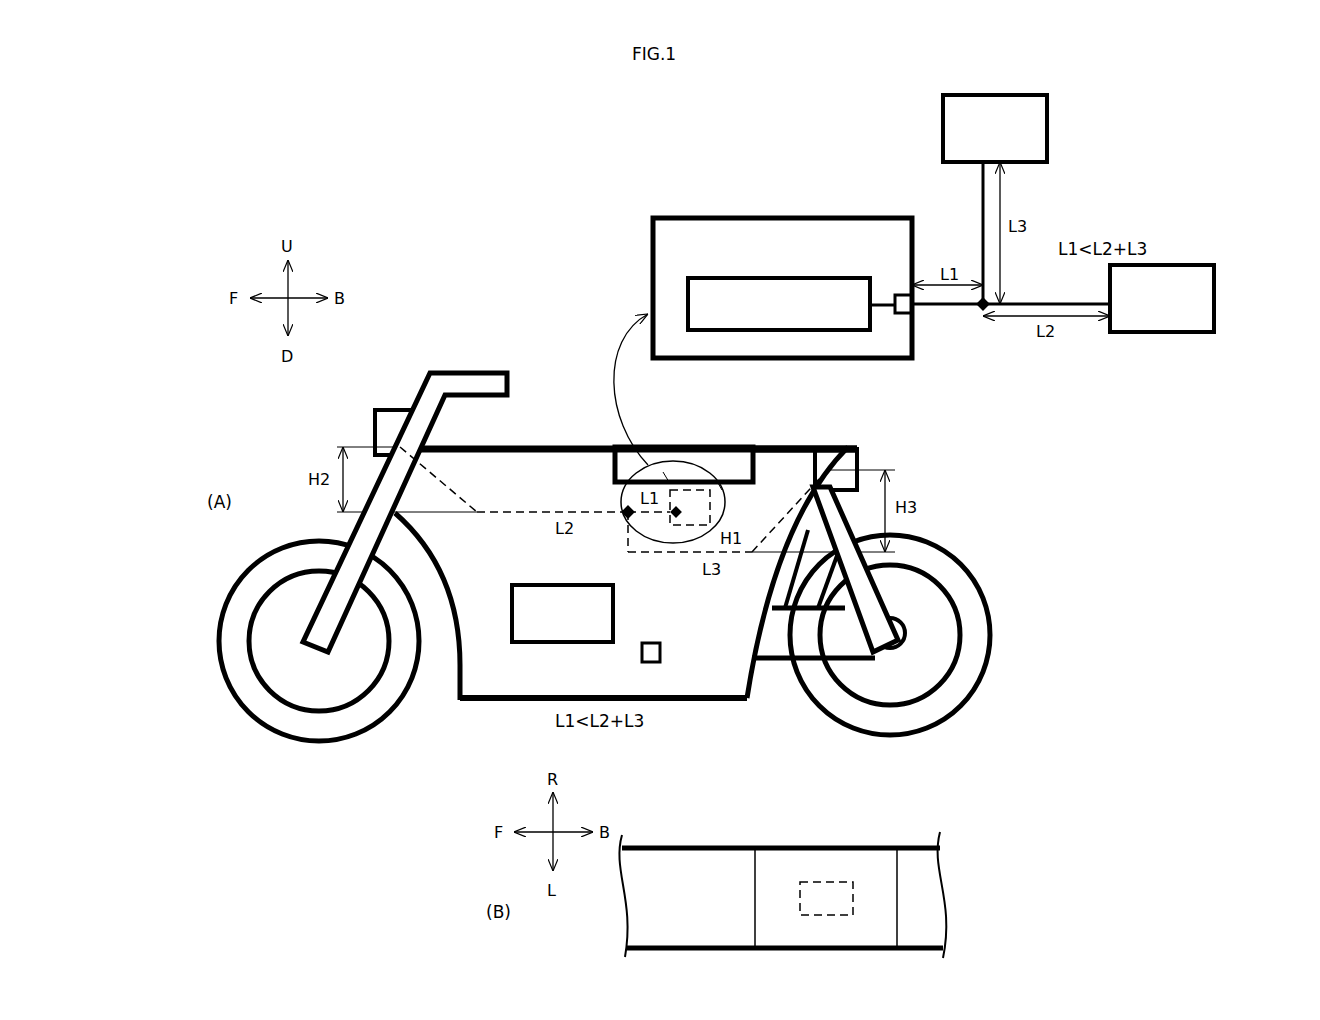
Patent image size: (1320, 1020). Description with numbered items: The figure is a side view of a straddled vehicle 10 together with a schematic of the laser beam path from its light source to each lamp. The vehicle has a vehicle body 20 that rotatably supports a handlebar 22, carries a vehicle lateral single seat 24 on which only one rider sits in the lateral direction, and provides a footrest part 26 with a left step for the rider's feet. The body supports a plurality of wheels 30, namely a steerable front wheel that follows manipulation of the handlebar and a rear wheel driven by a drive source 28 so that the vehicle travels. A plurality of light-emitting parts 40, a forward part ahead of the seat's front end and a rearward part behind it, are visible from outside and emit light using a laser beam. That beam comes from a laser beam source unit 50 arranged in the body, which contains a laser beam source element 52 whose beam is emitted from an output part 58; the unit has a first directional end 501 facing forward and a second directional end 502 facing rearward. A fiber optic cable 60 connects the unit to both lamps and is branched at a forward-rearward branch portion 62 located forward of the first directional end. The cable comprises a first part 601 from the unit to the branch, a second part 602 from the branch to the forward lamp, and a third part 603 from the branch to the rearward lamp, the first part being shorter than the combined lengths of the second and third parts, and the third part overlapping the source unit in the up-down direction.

The straddled vehicle 10 is at (432, 358).
The vehicle body 20 is at (448, 447).
The handlebar 22 is at (488, 373).
The vehicle lateral single seat 24 is at (748, 447).
The footrest part 26 is at (660, 652).
The drive source 28 is at (540, 642).
The wheels 30 is at (397, 708).
The light-emitting parts 40 is at (375, 430).
The laser beam source unit 50 is at (708, 218).
The laser beam source element 52 is at (750, 331).
The output part 58 is at (900, 314).
The fiber optic cable 60 is at (755, 391).
The forward-rearward branch portion 62 is at (980, 308).
The first directional end 501 is at (663, 472).
The second directional end 502 is at (718, 483).
The first part 601 is at (632, 548).
The second part 602 is at (506, 515).
The third part 603 is at (688, 560).